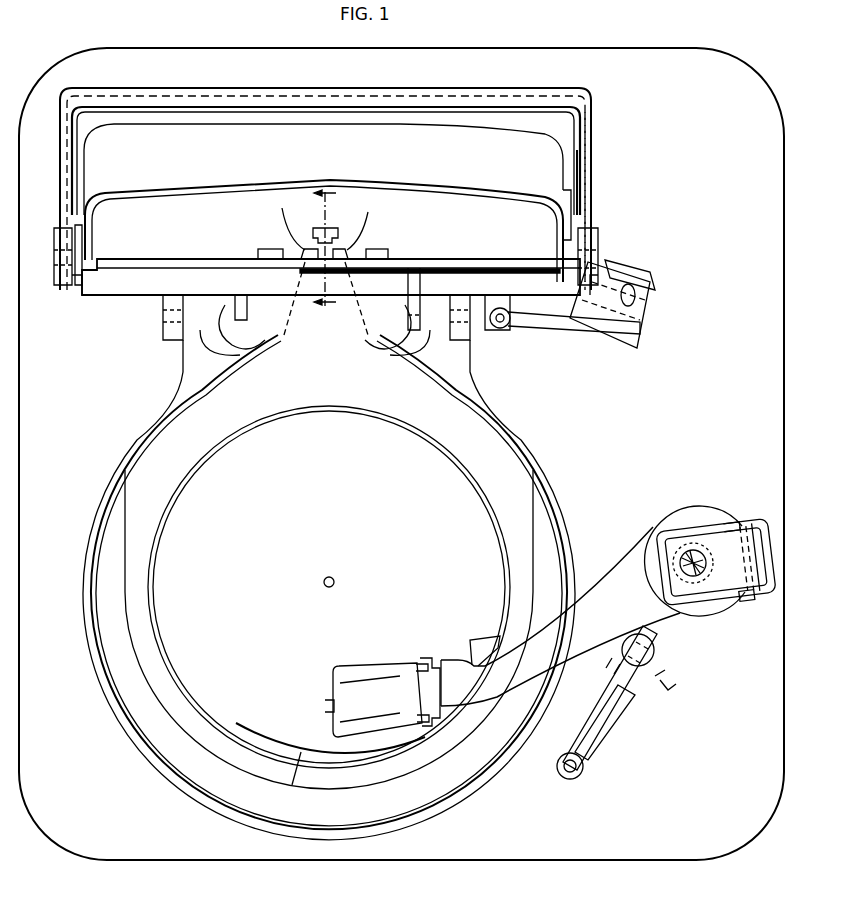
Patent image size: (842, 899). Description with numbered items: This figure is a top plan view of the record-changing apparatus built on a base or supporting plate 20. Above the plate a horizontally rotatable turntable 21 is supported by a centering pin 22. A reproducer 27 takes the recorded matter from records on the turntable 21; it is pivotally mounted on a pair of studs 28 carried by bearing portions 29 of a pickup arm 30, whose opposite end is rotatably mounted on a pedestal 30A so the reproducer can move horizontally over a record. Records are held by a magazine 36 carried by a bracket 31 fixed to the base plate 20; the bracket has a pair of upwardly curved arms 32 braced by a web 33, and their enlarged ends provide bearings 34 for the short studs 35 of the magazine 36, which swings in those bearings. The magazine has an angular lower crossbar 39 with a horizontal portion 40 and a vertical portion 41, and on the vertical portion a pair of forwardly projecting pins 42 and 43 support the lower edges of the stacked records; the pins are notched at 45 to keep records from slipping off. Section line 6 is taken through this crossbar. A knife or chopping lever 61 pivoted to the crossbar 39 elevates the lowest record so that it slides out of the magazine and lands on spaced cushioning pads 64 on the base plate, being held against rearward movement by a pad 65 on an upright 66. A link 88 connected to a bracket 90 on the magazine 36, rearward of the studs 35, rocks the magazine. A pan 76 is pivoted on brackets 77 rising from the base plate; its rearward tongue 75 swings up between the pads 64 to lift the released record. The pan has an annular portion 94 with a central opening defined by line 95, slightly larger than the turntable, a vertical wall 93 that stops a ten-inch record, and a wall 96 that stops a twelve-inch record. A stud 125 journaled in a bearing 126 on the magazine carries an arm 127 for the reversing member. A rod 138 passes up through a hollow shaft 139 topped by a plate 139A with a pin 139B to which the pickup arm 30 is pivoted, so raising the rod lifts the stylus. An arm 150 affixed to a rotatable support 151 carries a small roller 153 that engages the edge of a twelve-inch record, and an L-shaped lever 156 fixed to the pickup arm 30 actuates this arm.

The base plate 20 is at (396, 860).
The turntable 21 is at (195, 668).
The centering pin 22 is at (326, 580).
The reproducer 27 is at (356, 672).
The studs 28 is at (438, 658).
The bearing portions 29 is at (422, 662).
The pickup arm 30 is at (622, 588).
The pedestal 30A is at (668, 518).
The bracket 31 is at (510, 100).
The arms 32 is at (60, 182).
The web 33 is at (218, 100).
The bearings 34 is at (64, 276).
The studs 35 is at (66, 256).
The record magazine 36 is at (370, 135).
The crossbar 39 is at (135, 268).
The horizontal portion 40 is at (130, 292).
The vertical portion 41 is at (166, 260).
The pin 42 is at (262, 320).
The pin 43 is at (405, 318).
The notches 45 is at (232, 335).
The section line 6 is at (331, 257).
The knife lever 61 is at (505, 265).
The cushioning pads 64 is at (268, 250).
The pad 65 is at (320, 228).
The upright 66 is at (338, 246).
The tongue 75 is at (288, 230).
The pan 76 is at (92, 490).
The brackets 77 is at (166, 338).
The link 88 is at (580, 178).
The bracket 90 is at (568, 190).
The vertical wall 93 is at (304, 760).
The annular portion 94 is at (198, 720).
The line 95 is at (234, 720).
The wall 96 is at (200, 780).
The stud 125 is at (657, 309).
The bearing 126 is at (500, 330).
The arm 127 is at (575, 340).
The rod 138 is at (697, 556).
The hollow shaft 139 is at (697, 590).
The plate 139A is at (740, 540).
The pin 139B is at (744, 610).
The arm 150 is at (604, 700).
The support 151 is at (645, 645).
The roller 153 is at (585, 770).
The L-shaped lever 156 is at (476, 636).